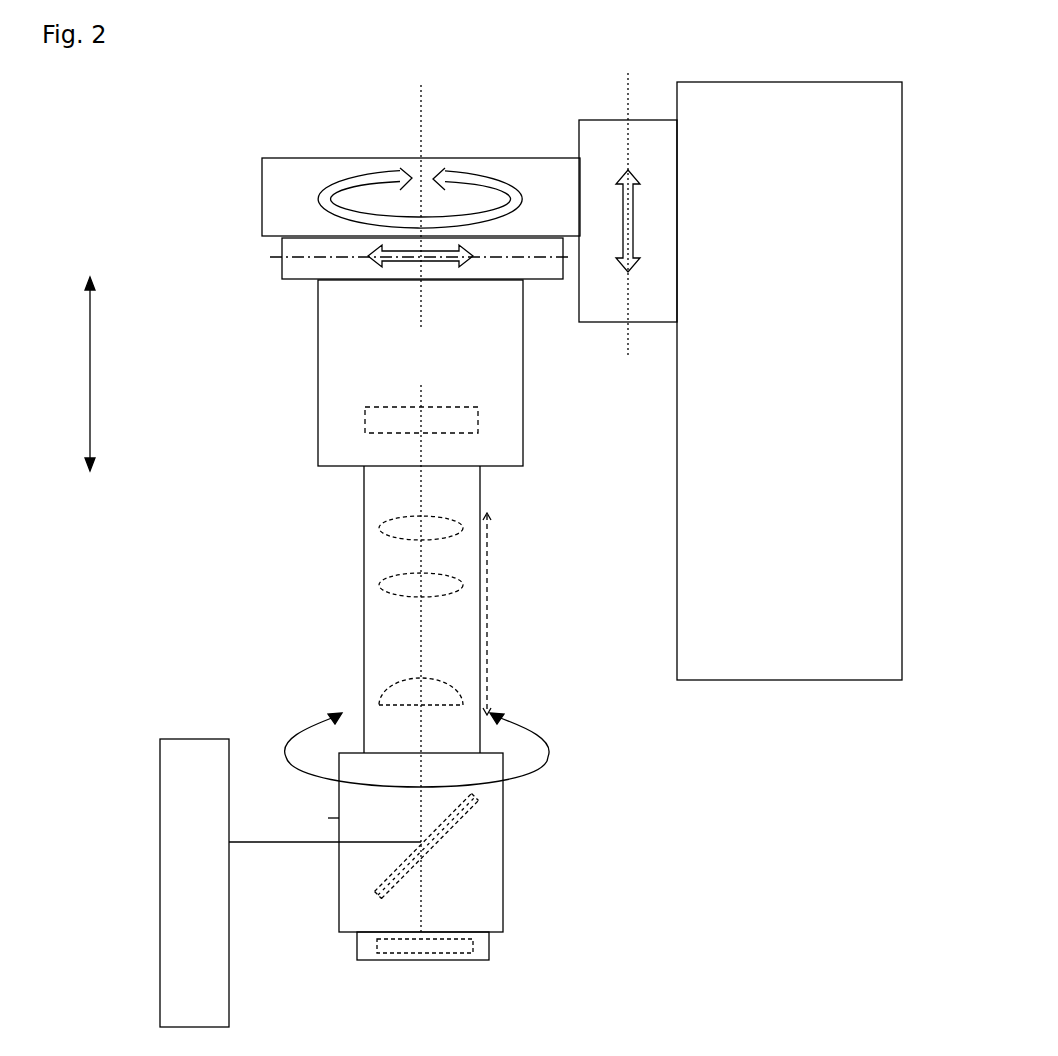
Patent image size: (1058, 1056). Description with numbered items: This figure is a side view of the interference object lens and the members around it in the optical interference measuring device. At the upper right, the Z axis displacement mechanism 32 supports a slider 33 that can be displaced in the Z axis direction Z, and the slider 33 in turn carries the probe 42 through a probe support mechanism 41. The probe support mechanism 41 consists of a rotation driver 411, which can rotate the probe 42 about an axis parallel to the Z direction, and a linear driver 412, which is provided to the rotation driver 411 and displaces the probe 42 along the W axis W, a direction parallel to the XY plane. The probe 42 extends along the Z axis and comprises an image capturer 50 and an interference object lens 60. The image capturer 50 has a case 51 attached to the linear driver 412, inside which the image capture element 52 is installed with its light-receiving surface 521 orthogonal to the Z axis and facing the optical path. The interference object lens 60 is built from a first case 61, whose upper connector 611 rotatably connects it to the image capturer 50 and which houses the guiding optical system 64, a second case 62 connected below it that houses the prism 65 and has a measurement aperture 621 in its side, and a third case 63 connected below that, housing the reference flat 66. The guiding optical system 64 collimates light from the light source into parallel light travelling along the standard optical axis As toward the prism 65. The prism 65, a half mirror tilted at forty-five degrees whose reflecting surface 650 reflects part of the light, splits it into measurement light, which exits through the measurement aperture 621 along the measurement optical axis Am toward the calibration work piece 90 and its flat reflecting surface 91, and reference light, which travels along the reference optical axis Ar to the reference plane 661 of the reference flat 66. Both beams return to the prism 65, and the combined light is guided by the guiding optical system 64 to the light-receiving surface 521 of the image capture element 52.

The Z axis displacement mechanism 32 is at (902, 283).
The slider 33 is at (677, 277).
The probe support mechanism 41 is at (344, 195).
The rotation driver 411 is at (262, 197).
The linear driver 412 is at (282, 271).
The W axis W is at (270, 256).
The probe 42 is at (352, 639).
The image capturer 50 is at (318, 429).
The case 51 is at (515, 370).
The image capture element 52 is at (478, 421).
The light-receiving surface 521 is at (472, 433).
The interference object lens 60 is at (387, 609).
The first case 61 is at (363, 607).
The connector 611 is at (496, 471).
The guiding optical system 64 is at (487, 608).
The second case 62 is at (415, 842).
The measurement aperture 621 is at (338, 862).
The prism 65 is at (475, 846).
The reflecting surface 650 is at (433, 846).
The third case 63 is at (429, 932).
The reference flat 66 is at (473, 930).
The reference plane 661 is at (458, 930).
The calibration work piece 90 is at (183, 739).
The reflecting surface 91 is at (229, 757).
The standard optical axis As is at (421, 391).
The measurement optical axis Am is at (250, 842).
The reference optical axis Ar is at (415, 918).
The Z axis direction Z is at (75, 374).